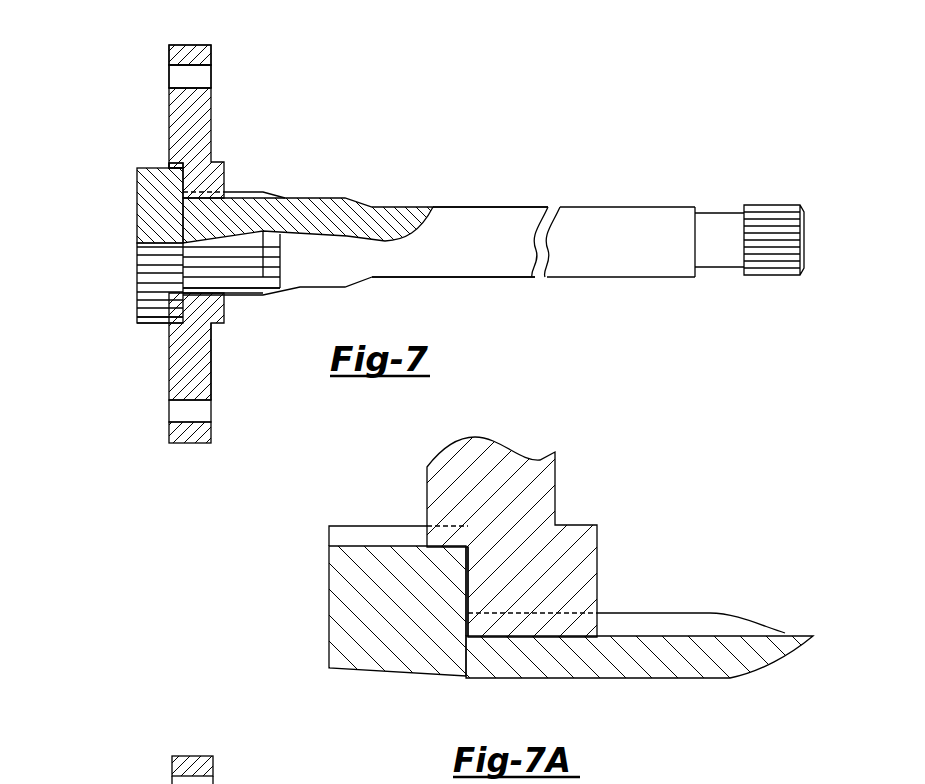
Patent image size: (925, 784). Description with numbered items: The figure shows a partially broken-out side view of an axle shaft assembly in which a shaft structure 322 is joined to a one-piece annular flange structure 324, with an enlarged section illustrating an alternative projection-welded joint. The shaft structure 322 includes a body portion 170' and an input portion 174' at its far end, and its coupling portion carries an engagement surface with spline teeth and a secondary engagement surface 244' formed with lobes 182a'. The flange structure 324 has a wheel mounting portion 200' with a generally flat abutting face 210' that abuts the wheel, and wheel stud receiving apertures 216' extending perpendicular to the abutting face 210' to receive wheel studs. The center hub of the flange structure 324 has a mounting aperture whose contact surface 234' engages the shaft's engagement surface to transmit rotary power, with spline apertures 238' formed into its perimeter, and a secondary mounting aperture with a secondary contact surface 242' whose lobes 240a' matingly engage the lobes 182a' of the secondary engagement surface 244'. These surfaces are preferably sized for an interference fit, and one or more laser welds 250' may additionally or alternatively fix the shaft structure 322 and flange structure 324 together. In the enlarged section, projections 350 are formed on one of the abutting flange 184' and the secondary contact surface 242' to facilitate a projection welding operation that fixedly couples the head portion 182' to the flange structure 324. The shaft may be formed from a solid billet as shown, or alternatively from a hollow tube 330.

In FIG. 7, the wheel mounting portion 200' is at (152, 42).
In FIG. 7, the wheel stud receiving apertures 216' is at (223, 77).
In FIG. 7, the flange structure 324 is at (168, 108).
In FIG. 7A, the flange structure 324 is at (515, 463).
In FIG. 7, the lobes 240a' is at (222, 140).
In FIG. 7, the lobes 182a' is at (110, 224).
In FIG. 7, the shaft structure 322 is at (399, 182).
In FIG. 7A, the shaft structure 322 is at (624, 664).
In FIG. 7, the body portion 170' is at (468, 220).
In FIG. 7, the input portion 174' is at (749, 290).
In FIG. 7, the contact surface 234' is at (181, 261).
In FIG. 7, the secondary engagement surface 244' is at (130, 344).
In FIG. 7, the laser welds 250' is at (213, 360).
In FIG. 7, the spline apertures 238' is at (231, 327).
In FIG. 7, the abutting face 210' is at (248, 364).
In FIG. 7A, the projections 350 is at (475, 581).
In FIG. 7A, the secondary contact surface 242' is at (625, 603).
In FIG. 7A, the head portion 182' is at (398, 626).
In FIG. 7A, the abutting flange 184' is at (463, 639).
In FIG. 7A, the hollow tube 330 is at (122, 782).